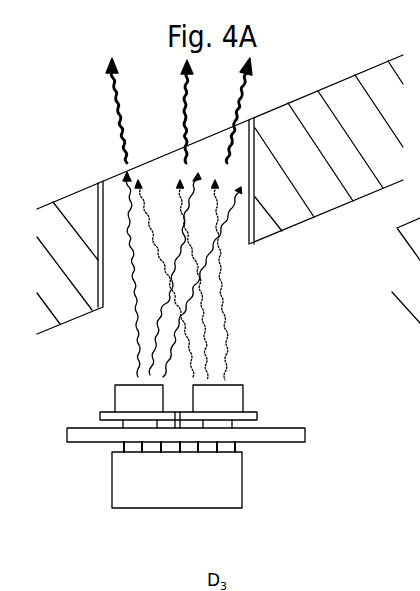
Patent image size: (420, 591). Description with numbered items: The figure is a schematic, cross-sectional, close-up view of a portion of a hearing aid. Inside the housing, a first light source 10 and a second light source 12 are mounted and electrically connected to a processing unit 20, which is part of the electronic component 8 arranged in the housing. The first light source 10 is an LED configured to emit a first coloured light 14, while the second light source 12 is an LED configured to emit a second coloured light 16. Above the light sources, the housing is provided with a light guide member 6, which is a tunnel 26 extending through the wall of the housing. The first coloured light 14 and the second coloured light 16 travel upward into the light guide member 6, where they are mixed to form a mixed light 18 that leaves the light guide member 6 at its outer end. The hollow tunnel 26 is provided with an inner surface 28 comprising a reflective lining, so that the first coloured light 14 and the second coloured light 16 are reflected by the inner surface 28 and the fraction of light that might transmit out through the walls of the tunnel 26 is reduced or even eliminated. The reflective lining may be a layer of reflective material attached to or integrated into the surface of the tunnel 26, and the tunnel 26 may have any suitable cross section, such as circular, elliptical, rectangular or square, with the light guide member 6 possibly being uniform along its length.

The light guide member 6 is at (243, 248).
The electronic component 8 is at (240, 539).
The first light source 10 is at (122, 396).
The second light source 12 is at (235, 401).
The first coloured light 14 is at (135, 323).
The second coloured light 16 is at (228, 360).
The mixed light 18 is at (115, 116).
The processing unit 20 is at (140, 497).
The tunnel 26 is at (167, 205).
The inner surface 28 is at (103, 222).